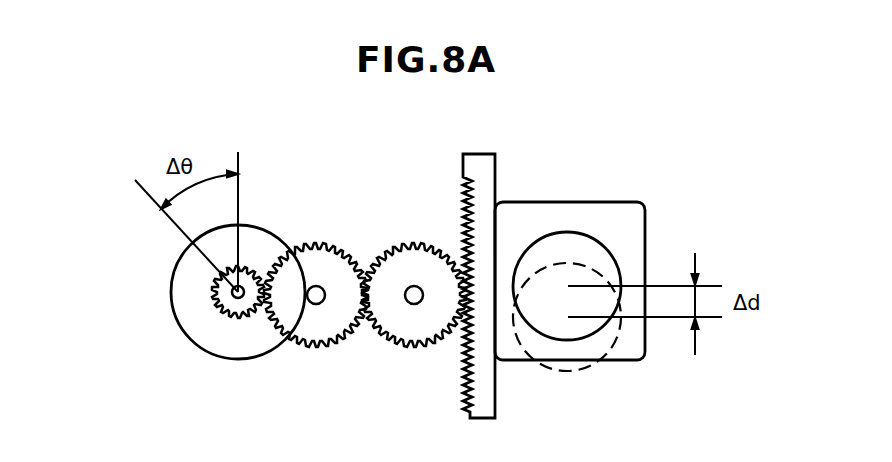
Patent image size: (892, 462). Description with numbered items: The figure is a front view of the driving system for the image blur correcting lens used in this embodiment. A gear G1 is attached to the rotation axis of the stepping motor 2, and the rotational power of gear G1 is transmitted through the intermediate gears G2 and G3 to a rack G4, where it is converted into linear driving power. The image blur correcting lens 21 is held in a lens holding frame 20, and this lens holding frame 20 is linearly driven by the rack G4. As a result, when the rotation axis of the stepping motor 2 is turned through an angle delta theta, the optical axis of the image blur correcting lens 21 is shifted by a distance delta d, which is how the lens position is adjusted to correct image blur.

The stepping motor 2 is at (172, 306).
The gear G1 is at (220, 314).
The gear G2 is at (316, 330).
The gear G3 is at (414, 330).
The rack G4 is at (465, 236).
The lens holding frame 20 is at (612, 237).
The image blur correcting lens 21 is at (562, 247).